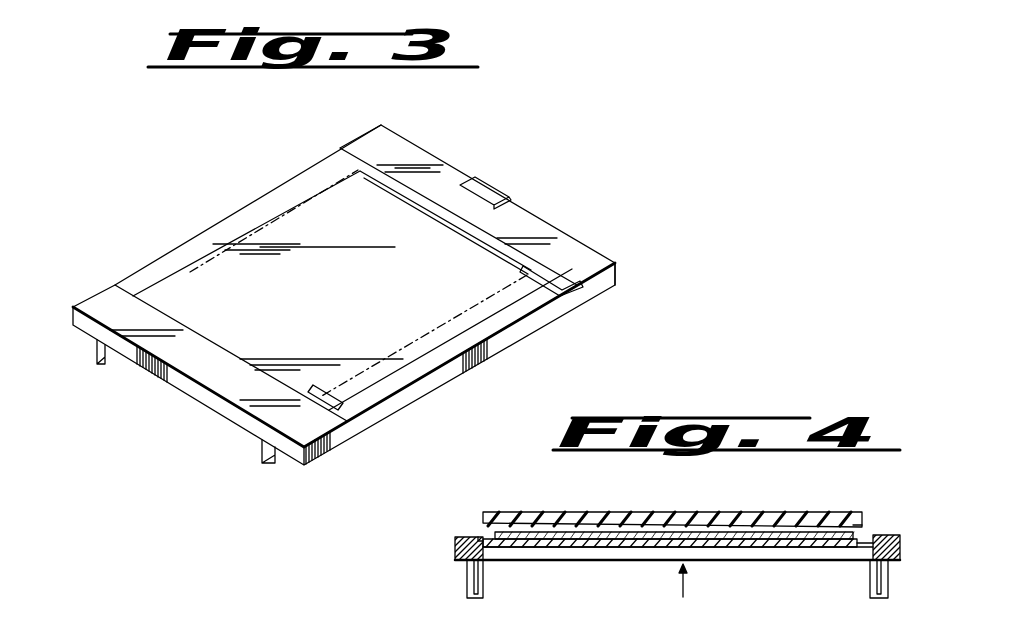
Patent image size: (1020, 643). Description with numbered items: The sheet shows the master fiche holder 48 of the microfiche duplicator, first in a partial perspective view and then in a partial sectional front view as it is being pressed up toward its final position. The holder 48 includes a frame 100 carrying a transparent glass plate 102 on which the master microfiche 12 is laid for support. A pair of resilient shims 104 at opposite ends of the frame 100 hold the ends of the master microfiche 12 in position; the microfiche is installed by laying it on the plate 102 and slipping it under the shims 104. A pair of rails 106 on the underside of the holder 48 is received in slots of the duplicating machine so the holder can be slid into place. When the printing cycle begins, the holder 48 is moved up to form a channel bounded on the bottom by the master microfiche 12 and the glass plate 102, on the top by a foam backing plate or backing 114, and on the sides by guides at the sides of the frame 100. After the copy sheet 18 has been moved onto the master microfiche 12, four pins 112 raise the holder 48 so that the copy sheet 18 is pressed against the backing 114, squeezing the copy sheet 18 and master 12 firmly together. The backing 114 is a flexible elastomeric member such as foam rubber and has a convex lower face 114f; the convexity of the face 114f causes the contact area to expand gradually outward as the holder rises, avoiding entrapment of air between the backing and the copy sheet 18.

In FIG. 3, the master microfiche 12 is at (270, 224).
In FIG. 4, the master microfiche 12 is at (747, 548).
In FIG. 4, the copy sheet 18 is at (780, 535).
In FIG. 3, the master fiche holder 48 is at (580, 239).
In FIG. 4, the master fiche holder 48 is at (453, 555).
In FIG. 3, the frame 100 is at (447, 162).
In FIG. 4, the frame 100 is at (455, 538).
In FIG. 3, the transparent glass plate 102 is at (318, 186).
In FIG. 4, the transparent glass plate 102 is at (574, 548).
In FIG. 3, the resilient shims 104 is at (577, 287).
In FIG. 3, the rails 106 is at (262, 452).
In FIG. 4, the pins 112 is at (476, 598).
In FIG. 4, the foam backing plate 114 is at (638, 520).
In FIG. 4, the convex lower face 114f is at (834, 527).